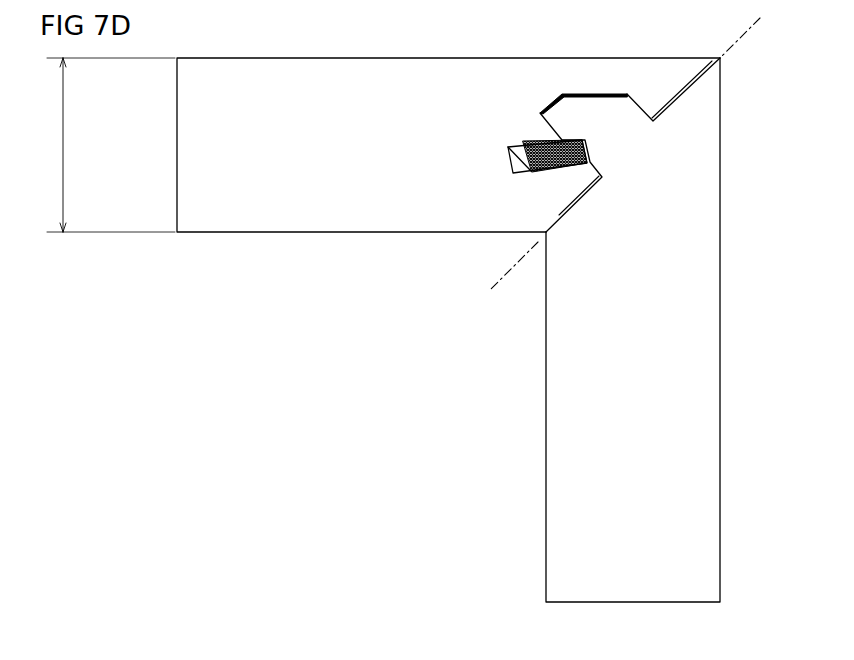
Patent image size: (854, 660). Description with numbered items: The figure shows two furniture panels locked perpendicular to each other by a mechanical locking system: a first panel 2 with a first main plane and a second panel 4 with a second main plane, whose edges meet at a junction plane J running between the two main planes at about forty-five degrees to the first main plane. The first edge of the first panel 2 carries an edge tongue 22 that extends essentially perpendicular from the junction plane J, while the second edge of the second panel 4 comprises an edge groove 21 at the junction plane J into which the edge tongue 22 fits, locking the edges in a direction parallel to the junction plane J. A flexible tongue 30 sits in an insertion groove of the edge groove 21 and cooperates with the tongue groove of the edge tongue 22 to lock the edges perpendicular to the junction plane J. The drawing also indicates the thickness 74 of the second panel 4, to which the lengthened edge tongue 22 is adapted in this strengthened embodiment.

The first panel 2 is at (558, 538).
The second panel 4 is at (280, 222).
The edge groove 21 is at (550, 108).
The edge tongue 22 is at (617, 133).
The flexible tongue 30 is at (527, 142).
The thickness of the second panel 74 is at (101, 145).
The junction plane J is at (625, 150).